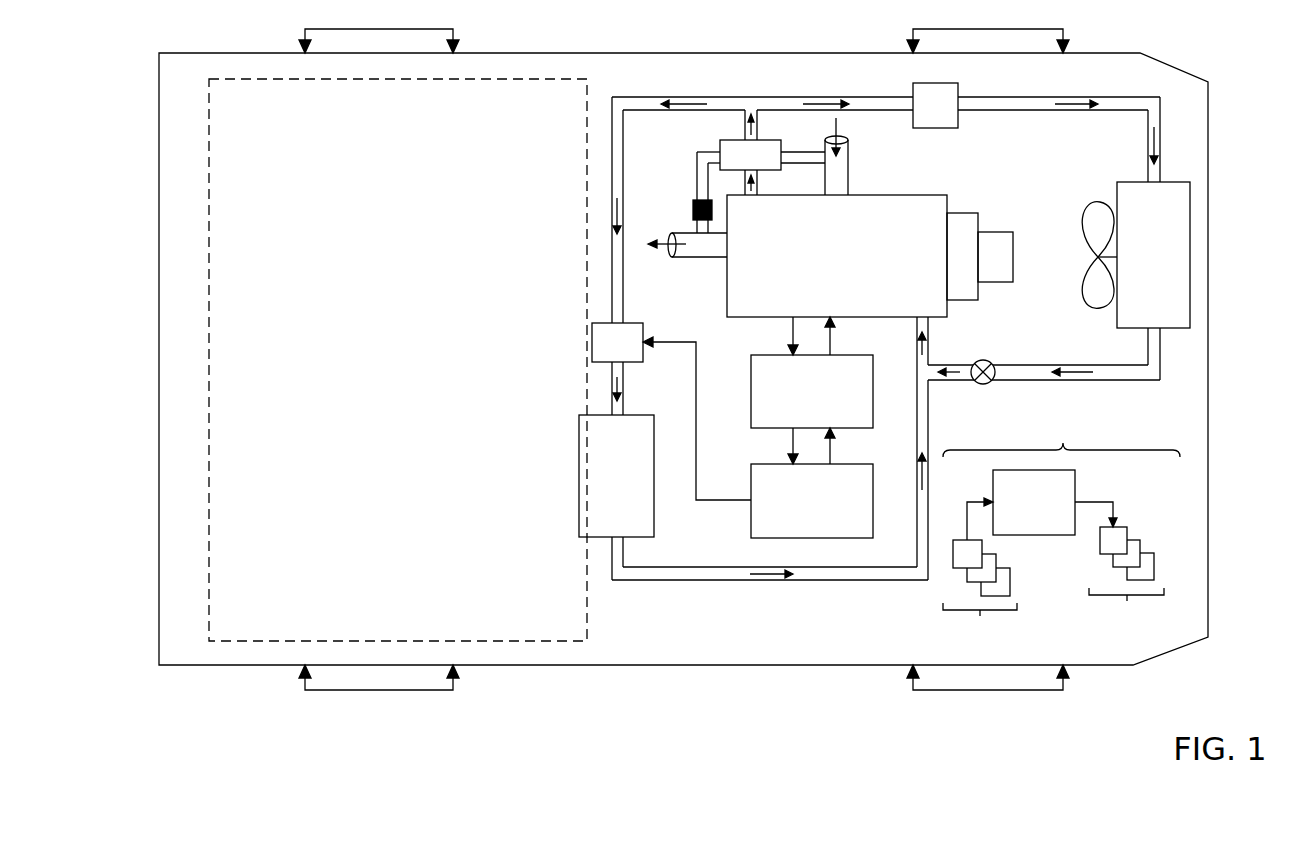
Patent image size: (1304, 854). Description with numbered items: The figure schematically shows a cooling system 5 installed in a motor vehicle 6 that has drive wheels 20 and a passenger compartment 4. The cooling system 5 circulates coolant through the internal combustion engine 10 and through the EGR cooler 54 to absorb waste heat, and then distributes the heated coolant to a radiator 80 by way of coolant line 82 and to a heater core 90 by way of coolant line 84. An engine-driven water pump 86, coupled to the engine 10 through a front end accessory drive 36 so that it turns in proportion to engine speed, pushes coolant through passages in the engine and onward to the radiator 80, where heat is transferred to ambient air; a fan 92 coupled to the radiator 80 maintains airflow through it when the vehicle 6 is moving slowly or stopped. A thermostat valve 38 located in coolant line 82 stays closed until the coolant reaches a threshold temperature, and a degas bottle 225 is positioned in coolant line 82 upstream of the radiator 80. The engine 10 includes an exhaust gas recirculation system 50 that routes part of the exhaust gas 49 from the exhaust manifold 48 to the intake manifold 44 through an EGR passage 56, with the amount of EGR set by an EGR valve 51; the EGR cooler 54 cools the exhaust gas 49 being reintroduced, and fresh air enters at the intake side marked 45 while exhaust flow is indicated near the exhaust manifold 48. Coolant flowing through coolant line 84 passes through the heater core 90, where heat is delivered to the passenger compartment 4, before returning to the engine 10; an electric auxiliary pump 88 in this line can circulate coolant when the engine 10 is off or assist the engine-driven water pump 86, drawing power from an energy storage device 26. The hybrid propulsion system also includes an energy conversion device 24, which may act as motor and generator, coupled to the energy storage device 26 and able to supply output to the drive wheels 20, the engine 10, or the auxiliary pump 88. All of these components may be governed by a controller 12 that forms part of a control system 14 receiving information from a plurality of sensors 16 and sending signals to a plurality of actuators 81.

The passenger compartment 4 is at (352, 399).
The cooling system 5 is at (1174, 126).
The motor vehicle 6 is at (625, 53).
The internal combustion engine 10 is at (910, 231).
The controller 12 is at (1022, 513).
The control system 14 is at (1061, 428).
The sensors 16 is at (983, 580).
The drive wheels 20 is at (380, 29).
The energy conversion device 24 is at (800, 402).
The energy storage device 26 is at (800, 511).
The front end accessory drive 36 is at (962, 213).
The thermostat valve 38 is at (988, 362).
The intake manifold 44 is at (850, 175).
The exhaust gas 45 is at (841, 131).
The exhaust manifold 48 is at (707, 257).
The exhaust gas 49 is at (669, 240).
The exhaust gas recirculation system 50 is at (677, 156).
The EGR valve 51 is at (692, 207).
The EGR cooler 54 is at (738, 166).
The EGR passage 56 is at (789, 152).
The radiator 80 is at (1142, 268).
The actuators 81 is at (1127, 571).
The coolant line 82 is at (993, 97).
The coolant line 84 is at (684, 97).
The engine-driven water pump 86 is at (984, 268).
The electric auxiliary pump 88 is at (605, 353).
The heater core 90 is at (605, 487).
The fan 92 is at (1085, 225).
The degas bottle 225 is at (935, 87).